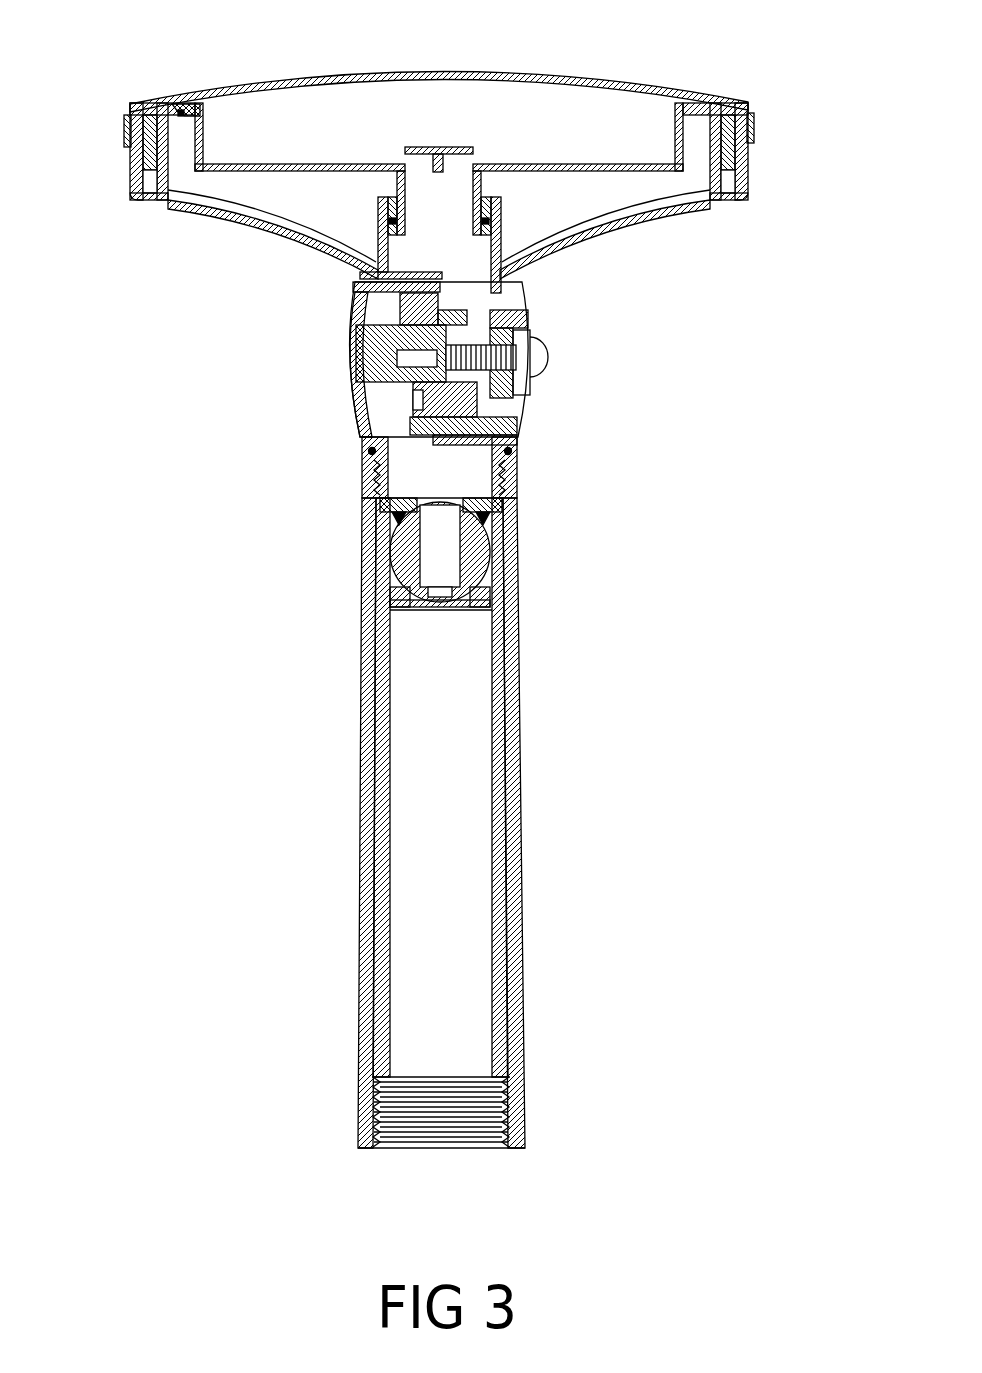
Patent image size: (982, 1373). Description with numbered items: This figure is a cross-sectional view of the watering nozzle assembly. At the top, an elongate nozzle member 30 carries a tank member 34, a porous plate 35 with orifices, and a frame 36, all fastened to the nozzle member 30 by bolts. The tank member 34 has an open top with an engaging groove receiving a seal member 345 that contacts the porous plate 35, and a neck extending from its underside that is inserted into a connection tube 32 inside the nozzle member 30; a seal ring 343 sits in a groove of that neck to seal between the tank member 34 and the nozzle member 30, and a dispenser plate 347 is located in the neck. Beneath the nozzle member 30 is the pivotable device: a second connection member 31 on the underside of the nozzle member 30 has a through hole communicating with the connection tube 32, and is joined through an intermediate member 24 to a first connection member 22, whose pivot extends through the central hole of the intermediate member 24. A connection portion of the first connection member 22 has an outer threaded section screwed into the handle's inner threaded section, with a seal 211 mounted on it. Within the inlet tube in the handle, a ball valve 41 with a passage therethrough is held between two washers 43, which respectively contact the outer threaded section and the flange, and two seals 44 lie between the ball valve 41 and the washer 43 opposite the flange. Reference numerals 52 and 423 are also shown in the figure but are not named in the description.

The first connection member 22 is at (352, 393).
The intermediate member 24 is at (475, 407).
The elongate nozzle member 30 is at (253, 225).
The second connection member 31 is at (530, 320).
The connection tube 32 is at (497, 248).
The tank member 34 is at (600, 164).
The porous plate 35 is at (343, 78).
The frame 36 is at (755, 133).
The ball valve 41 is at (410, 550).
The washers 43 is at (373, 503).
The seals 44 is at (505, 523).
The clamp ring 52 is at (128, 113).
The seal 211 is at (370, 450).
The seal ring 343 is at (495, 222).
The seal member 345 is at (200, 98).
The dispenser plate 347 is at (452, 146).
The adjusting screw 423 is at (513, 385).